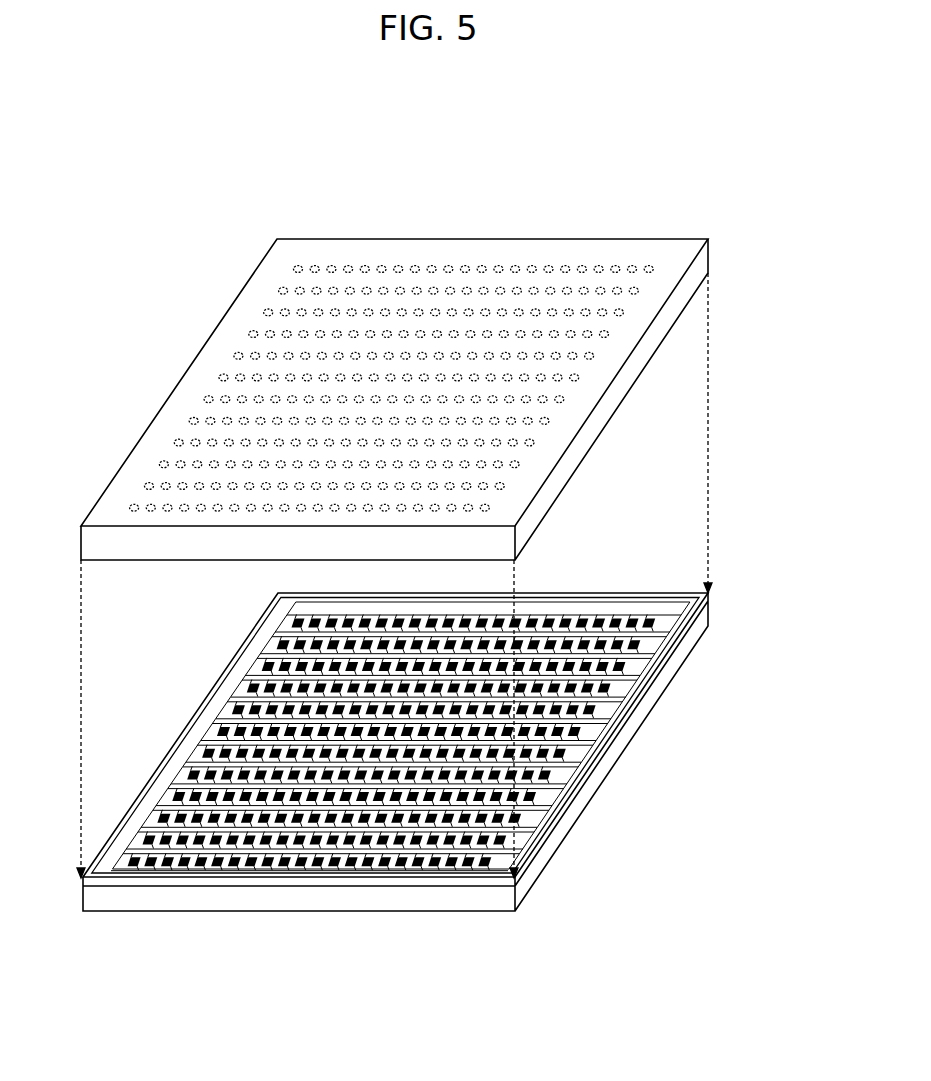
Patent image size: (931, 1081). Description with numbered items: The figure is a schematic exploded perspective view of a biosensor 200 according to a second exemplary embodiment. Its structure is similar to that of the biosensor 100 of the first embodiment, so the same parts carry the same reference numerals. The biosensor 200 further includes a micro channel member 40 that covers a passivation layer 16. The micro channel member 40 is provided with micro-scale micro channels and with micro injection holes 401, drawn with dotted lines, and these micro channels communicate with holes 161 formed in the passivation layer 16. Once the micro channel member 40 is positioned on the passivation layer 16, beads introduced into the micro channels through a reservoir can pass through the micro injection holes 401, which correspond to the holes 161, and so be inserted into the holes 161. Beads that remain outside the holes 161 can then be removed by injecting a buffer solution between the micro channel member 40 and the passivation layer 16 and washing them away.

The biosensor 200 is at (403, 164).
The micro channel member 40 is at (637, 239).
The micro injection holes 401 is at (293, 269).
The biosensor 100 is at (713, 601).
The passivation layer 16 is at (560, 813).
The holes 161 is at (292, 623).